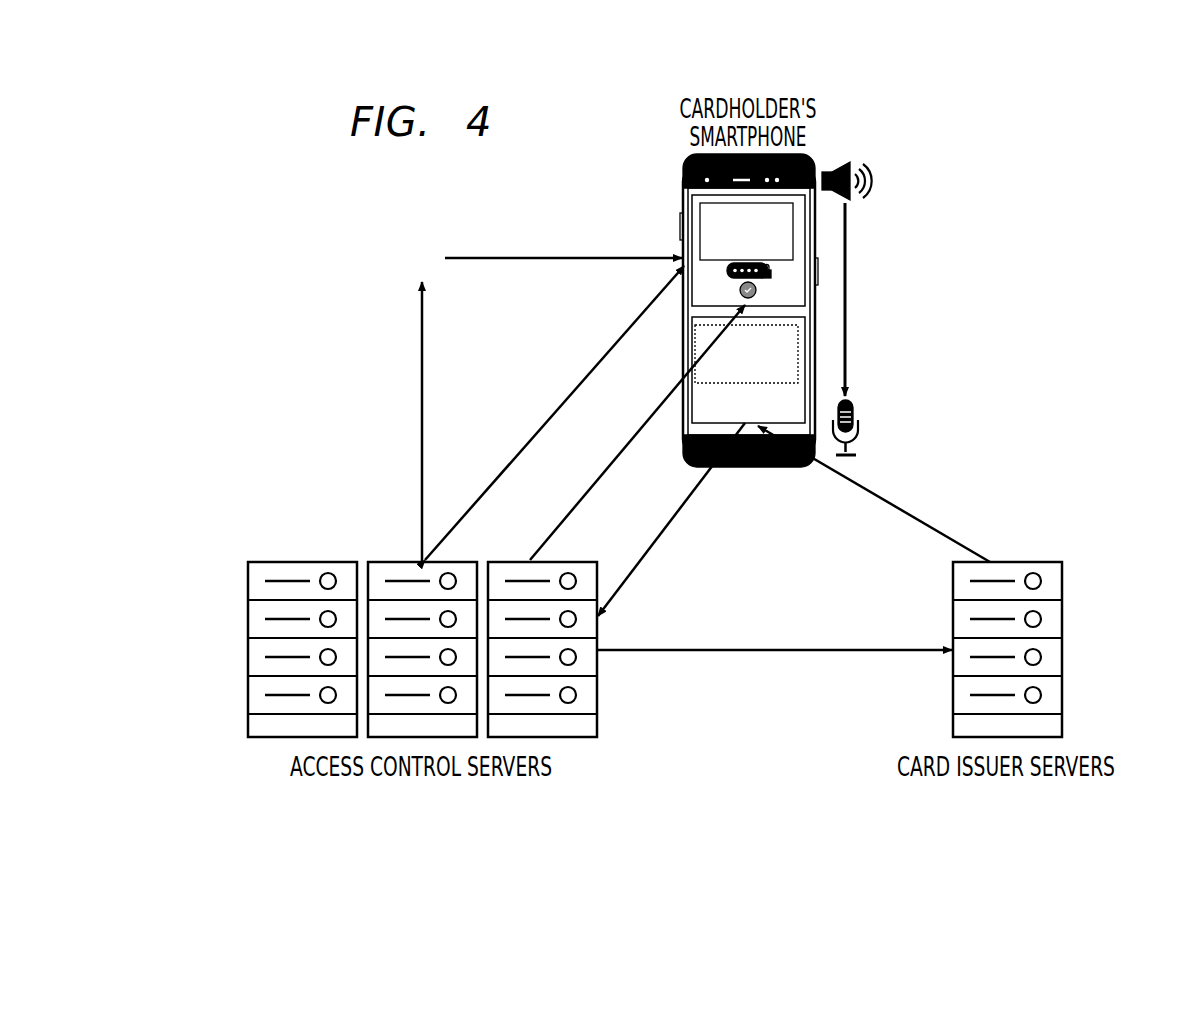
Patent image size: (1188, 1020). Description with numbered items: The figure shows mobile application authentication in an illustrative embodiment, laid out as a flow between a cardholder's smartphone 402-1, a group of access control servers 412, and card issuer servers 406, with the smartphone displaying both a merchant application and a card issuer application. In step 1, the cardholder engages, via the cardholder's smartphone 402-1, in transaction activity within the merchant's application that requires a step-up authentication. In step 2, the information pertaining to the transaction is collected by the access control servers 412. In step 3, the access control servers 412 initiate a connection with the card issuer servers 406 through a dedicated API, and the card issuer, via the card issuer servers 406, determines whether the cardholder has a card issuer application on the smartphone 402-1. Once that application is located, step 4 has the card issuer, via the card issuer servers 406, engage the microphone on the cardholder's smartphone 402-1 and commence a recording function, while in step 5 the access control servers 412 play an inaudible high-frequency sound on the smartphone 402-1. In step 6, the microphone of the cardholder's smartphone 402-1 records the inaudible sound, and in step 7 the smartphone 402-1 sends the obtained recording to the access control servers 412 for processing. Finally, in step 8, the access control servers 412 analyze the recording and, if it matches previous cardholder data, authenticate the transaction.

The cardholder's smartphone 402-1 is at (683, 192).
The access control servers 412 is at (248, 578).
The card issuer servers 406 is at (1060, 583).
The step 1 is at (703, 287).
The step 2 is at (554, 413).
The step 3 is at (774, 650).
The step 4 is at (874, 494).
The step 5 is at (540, 398).
The step 6 is at (845, 299).
The step 7 is at (671, 519).
The step 8 is at (637, 432).